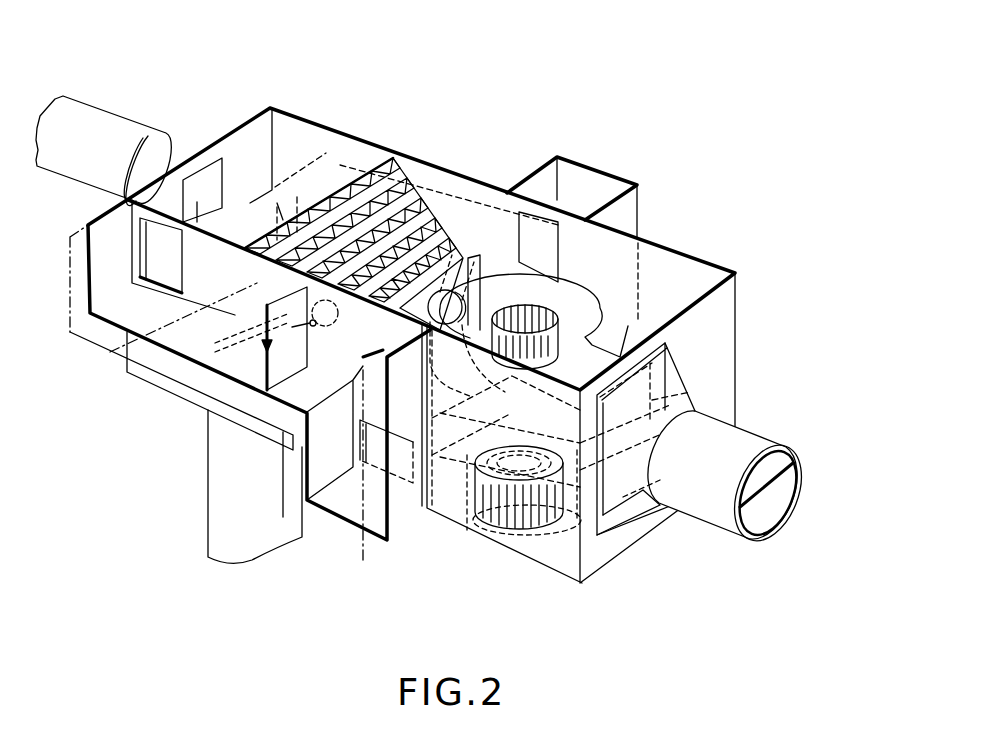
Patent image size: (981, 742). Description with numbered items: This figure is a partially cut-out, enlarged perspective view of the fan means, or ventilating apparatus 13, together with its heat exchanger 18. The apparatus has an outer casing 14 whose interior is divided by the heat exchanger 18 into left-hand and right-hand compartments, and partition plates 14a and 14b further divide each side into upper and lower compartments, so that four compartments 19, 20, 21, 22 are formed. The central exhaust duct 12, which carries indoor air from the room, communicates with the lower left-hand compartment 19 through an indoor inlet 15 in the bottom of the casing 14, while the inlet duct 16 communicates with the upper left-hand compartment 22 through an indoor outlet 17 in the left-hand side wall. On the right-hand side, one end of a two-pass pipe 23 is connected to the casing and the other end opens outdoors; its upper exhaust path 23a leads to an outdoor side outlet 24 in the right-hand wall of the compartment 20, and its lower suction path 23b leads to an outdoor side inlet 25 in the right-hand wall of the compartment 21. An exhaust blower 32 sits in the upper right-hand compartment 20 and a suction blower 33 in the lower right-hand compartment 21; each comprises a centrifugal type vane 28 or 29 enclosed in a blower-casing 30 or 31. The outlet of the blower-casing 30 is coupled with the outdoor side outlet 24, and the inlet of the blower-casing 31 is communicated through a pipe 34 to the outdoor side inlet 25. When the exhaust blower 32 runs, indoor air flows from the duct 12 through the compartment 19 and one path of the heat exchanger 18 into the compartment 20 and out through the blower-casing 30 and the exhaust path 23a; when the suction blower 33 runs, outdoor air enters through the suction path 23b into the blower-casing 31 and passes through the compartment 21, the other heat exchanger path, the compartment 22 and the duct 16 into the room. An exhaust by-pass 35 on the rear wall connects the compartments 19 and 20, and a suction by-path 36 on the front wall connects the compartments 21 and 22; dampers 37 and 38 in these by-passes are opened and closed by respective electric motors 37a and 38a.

The central exhaust duct 12 is at (207, 545).
The ventilating apparatus 13 is at (284, 87).
The outer casing 14 is at (733, 325).
The partition plate 14a is at (257, 212).
The partition plate 14b is at (623, 337).
The indoor inlet 15 is at (233, 327).
The inlet duct 16 is at (98, 110).
The indoor outlet 17 is at (207, 156).
The heat exchanger 18 is at (413, 173).
The lower left-hand compartment 19 is at (145, 356).
The upper right-hand compartment 20 is at (630, 253).
The lower right-hand compartment 21 is at (570, 553).
The upper left-hand compartment 22 is at (317, 140).
The two-pass pipe 23 is at (773, 437).
The upper exhaust path 23a is at (780, 470).
The lower suction path 23b is at (767, 522).
The outdoor side outlet 24 is at (690, 392).
The outdoor side inlet 25 is at (627, 492).
The centrifugal type vane 28 is at (527, 387).
The centrifugal type vane 29 is at (470, 513).
The blower-casing 30 is at (570, 295).
The blower-casing 31 is at (510, 530).
The exhaust blower 32 is at (597, 308).
The suction blower 33 is at (533, 532).
The pipe 34 is at (590, 540).
The exhaust by-pass 35 is at (640, 200).
The suction by-path 36 is at (390, 545).
The damper 37 is at (470, 270).
The electric motor 37a is at (478, 364).
The damper 38 is at (285, 372).
The electric motor 38a is at (330, 333).